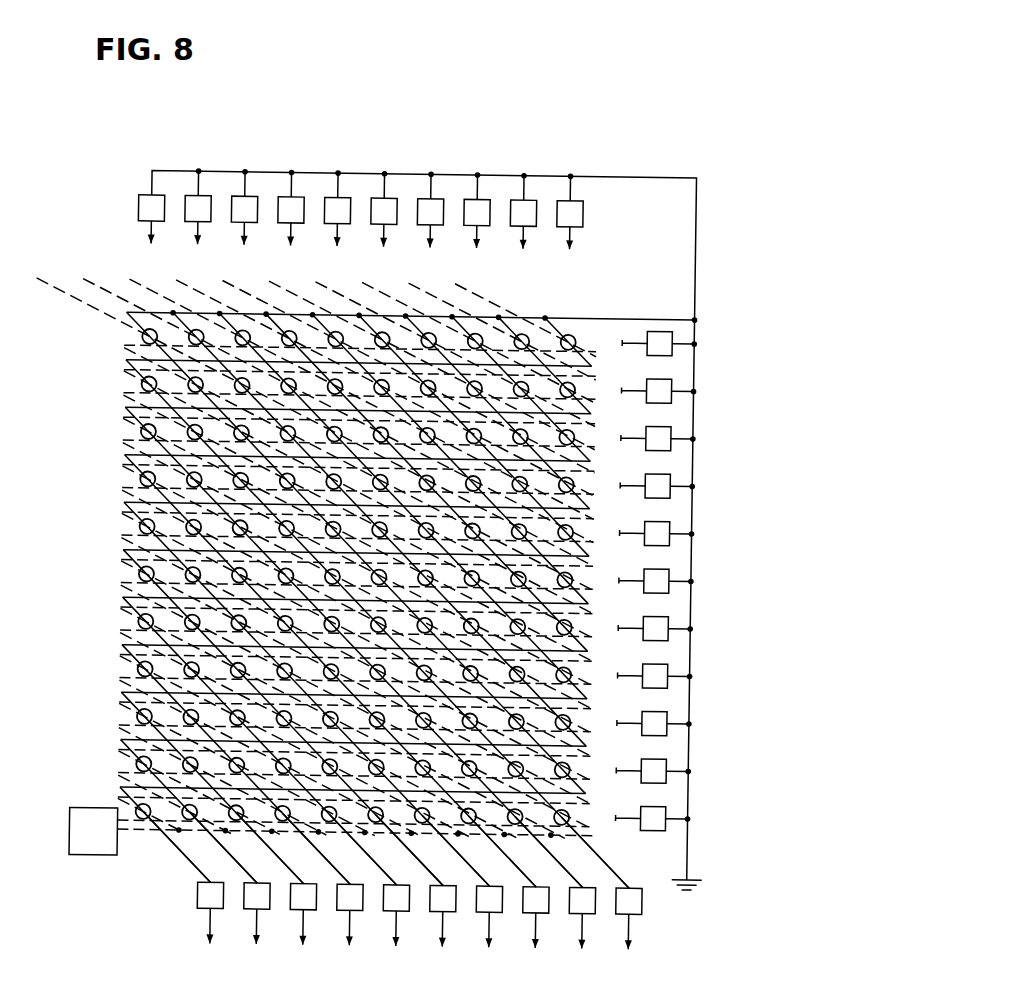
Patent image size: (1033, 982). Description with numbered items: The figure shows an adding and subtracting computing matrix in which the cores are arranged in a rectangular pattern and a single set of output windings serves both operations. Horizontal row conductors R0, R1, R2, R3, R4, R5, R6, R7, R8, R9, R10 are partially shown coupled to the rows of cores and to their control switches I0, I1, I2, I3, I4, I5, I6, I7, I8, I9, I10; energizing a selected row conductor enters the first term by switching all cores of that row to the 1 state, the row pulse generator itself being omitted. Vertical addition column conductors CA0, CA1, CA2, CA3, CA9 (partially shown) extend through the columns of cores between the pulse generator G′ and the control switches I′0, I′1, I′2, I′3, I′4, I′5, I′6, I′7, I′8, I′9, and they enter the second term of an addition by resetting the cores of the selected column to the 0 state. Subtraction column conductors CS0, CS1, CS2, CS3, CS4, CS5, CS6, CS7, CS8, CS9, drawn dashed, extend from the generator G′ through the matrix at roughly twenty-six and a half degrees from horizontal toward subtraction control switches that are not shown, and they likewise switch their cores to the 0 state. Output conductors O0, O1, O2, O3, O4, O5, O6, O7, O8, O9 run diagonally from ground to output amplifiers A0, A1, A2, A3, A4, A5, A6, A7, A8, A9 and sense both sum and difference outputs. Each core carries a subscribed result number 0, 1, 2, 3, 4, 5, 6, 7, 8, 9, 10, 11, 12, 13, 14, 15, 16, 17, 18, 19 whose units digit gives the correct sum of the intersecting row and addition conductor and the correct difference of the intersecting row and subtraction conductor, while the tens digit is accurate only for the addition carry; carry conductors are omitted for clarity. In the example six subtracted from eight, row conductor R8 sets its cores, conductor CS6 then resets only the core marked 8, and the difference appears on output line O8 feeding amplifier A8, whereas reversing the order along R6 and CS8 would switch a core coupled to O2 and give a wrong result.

The control switch I′0 is at (560, 200).
The control switch I′1 is at (513, 199).
The control switch I′2 is at (467, 199).
The control switch I′3 is at (420, 198).
The control switch I′4 is at (374, 208).
The control switch I′5 is at (327, 208).
The control switch I′6 is at (281, 207).
The control switch I′7 is at (234, 207).
The control switch I′8 is at (188, 206).
The control switch I′9 is at (146, 197).
The addition column conductor CA0 is at (555, 241).
The addition column conductor CA1 is at (509, 241).
The addition column conductor CA2 is at (462, 240).
The addition column conductor CA3 is at (416, 239).
The addition column conductor CA9 is at (133, 233).
The subtraction column conductor CS0 is at (454, 284).
The subtraction column conductor CS1 is at (408, 284).
The subtraction column conductor CS2 is at (361, 284).
The subtraction column conductor CS3 is at (314, 284).
The subtraction column conductor CS4 is at (268, 284).
The subtraction column conductor CS5 is at (222, 284).
The subtraction column conductor CS6 is at (175, 284).
The subtraction column conductor CS7 is at (128, 284).
The subtraction column conductor CS8 is at (82, 284).
The subtraction column conductor CS9 is at (36, 284).
The output conductor O0 is at (595, 852).
The output conductor O1 is at (337, 638).
The output conductor O2 is at (337, 661).
The output conductor O3 is at (455, 850).
The output conductor O4 is at (336, 709).
The output conductor O5 is at (362, 849).
The output conductor O6 is at (316, 848).
The output conductor O7 is at (335, 781).
The output conductor O8 is at (223, 847).
The output conductor O9 is at (176, 846).
The output amplifier A0 is at (613, 919).
The output amplifier A1 is at (567, 918).
The output amplifier A2 is at (520, 917).
The output amplifier A3 is at (474, 917).
The output amplifier A4 is at (427, 916).
The output amplifier A5 is at (381, 915).
The output amplifier A6 is at (334, 915).
The output amplifier A7 is at (288, 914).
The output amplifier A8 is at (241, 913).
The output amplifier A9 is at (195, 913).
The row conductor R0 is at (650, 334).
The row conductor R1 is at (649, 381).
The row conductor R2 is at (649, 429).
The row conductor R3 is at (648, 476).
The row conductor R4 is at (647, 524).
The row conductor R5 is at (647, 571).
The row conductor R6 is at (646, 619).
The row conductor R7 is at (645, 666).
The row conductor R8 is at (645, 714).
The row conductor R9 is at (644, 761).
The row conductor R10 is at (641, 809).
The control switch I0 is at (667, 370).
The control switch I1 is at (666, 417).
The control switch I2 is at (665, 465).
The control switch I3 is at (665, 512).
The control switch I4 is at (664, 560).
The control switch I5 is at (663, 607).
The control switch I6 is at (663, 655).
The control switch I7 is at (662, 702).
The control switch I8 is at (661, 749).
The control switch I9 is at (661, 797).
The control switch I10 is at (663, 844).
The pulse generator G′ is at (332, 834).
The result number 0 is at (567, 340).
The result number 1 is at (543, 364).
The result number 2 is at (519, 387).
The result number 3 is at (496, 410).
The result number 4 is at (472, 435).
The result number 5 is at (449, 458).
The result number 6 is at (425, 481).
The result number 7 is at (401, 505).
The result number 8 is at (378, 528).
The result number 9 is at (356, 552).
The result number 10 is at (378, 624).
The result number 11 is at (354, 647).
The result number 12 is at (330, 671).
The result number 13 is at (307, 694).
The result number 14 is at (283, 718).
The result number 15 is at (260, 741).
The result number 16 is at (236, 765).
The result number 17 is at (213, 788).
The result number 18 is at (189, 811).
The result number 19 is at (165, 834).